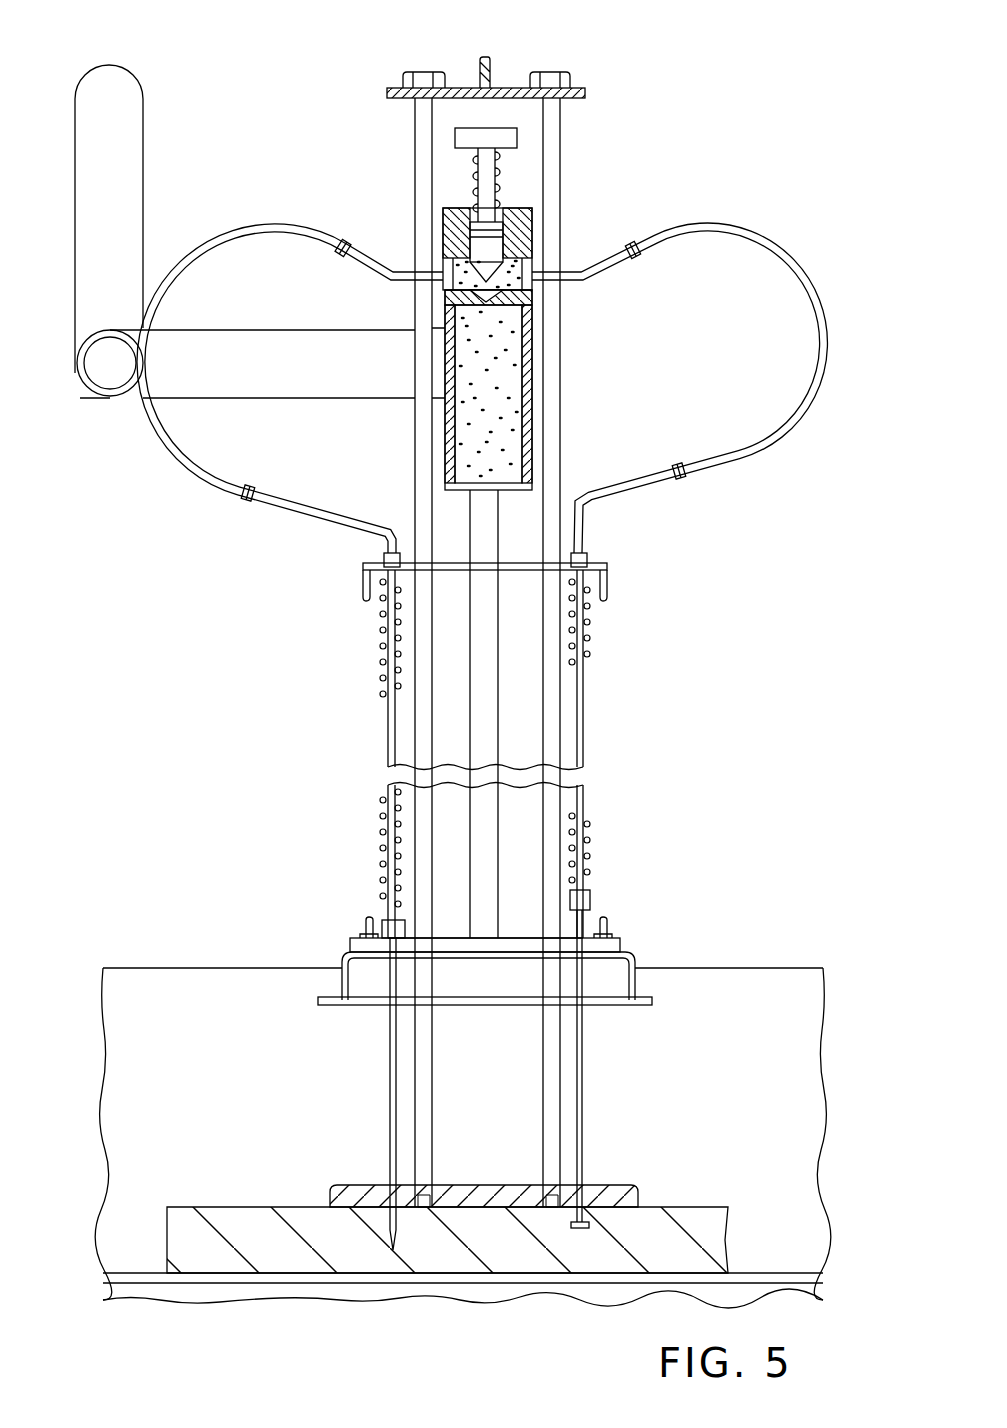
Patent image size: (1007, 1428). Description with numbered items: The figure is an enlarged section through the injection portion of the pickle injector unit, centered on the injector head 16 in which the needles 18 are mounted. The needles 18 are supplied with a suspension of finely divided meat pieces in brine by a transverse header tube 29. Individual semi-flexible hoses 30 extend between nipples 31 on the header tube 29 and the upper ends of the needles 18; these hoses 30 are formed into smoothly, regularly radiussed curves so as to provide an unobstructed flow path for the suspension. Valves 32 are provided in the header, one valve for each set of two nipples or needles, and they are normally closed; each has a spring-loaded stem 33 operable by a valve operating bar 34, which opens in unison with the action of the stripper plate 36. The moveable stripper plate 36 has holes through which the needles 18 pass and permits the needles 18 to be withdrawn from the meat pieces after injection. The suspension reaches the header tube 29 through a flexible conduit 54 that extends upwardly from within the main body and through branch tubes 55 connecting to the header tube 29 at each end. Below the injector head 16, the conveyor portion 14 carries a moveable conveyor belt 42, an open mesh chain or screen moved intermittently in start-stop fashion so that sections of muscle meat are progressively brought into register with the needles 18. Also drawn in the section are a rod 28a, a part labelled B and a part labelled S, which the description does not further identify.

The conveyor portion 14 is at (125, 1236).
The injector head 16 is at (735, 198).
The needles 18 is at (388, 722).
The rod 28a is at (493, 690).
The header tube 29 is at (535, 403).
The semi-flexible hoses 30 is at (249, 224).
The nipples 31 is at (373, 258).
The valves 32 is at (518, 262).
The spring-loaded stems 33 is at (486, 185).
The valve operating bar 34 is at (465, 87).
The stripper plate 36 is at (335, 1186).
The conveyor belt 42 is at (793, 1278).
The flexible conduit 54 is at (143, 170).
The branch tubes 55 is at (97, 397).
The bolt B is at (586, 1208).
The substrate S is at (687, 1225).